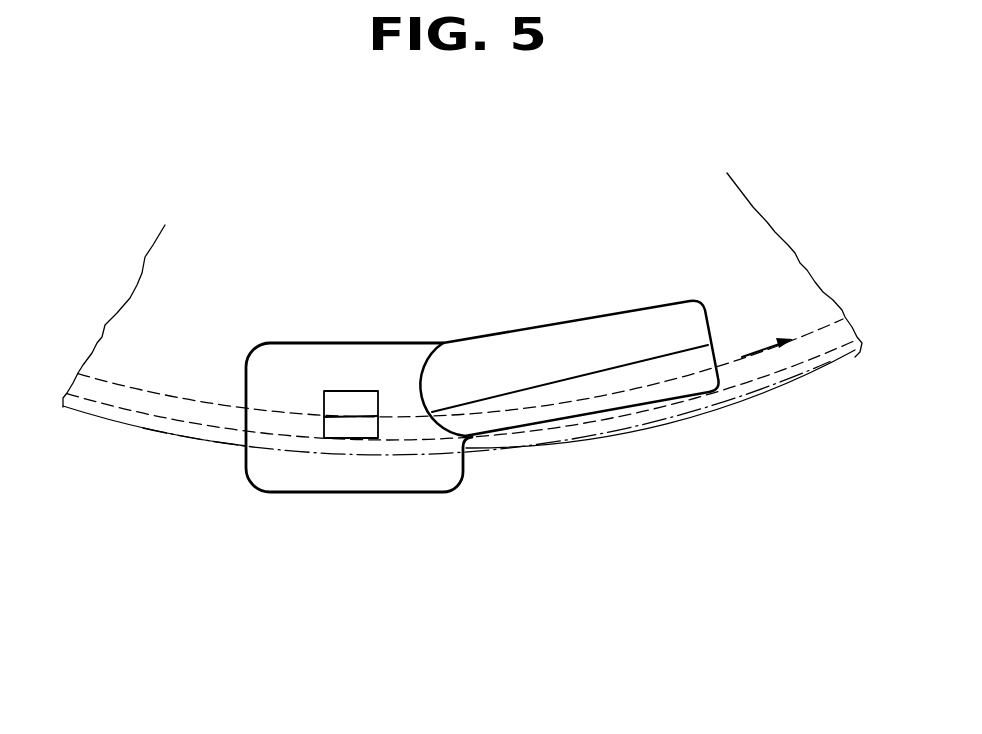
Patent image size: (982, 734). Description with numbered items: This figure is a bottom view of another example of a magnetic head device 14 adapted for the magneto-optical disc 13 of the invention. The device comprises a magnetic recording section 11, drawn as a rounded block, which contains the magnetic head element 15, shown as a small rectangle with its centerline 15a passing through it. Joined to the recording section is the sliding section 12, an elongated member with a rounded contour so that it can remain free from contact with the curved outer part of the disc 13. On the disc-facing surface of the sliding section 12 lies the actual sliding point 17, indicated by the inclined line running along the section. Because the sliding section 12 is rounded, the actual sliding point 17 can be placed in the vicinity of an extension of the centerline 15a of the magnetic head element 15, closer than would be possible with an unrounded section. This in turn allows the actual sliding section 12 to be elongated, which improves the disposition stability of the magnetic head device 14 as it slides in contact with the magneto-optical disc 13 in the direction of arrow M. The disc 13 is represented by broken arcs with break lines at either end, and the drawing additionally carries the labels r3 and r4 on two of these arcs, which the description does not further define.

The magnetic recording section 11 is at (282, 360).
The sliding section 12 is at (688, 318).
The magneto-optical disc 13 is at (770, 273).
The magnetic head device 14 is at (489, 387).
The magnetic head element 15 is at (358, 430).
The centerline of the magnetic head element 15a is at (350, 413).
The actual sliding point 17 is at (598, 372).
The radius r3 is at (444, 368).
The radius r4 is at (446, 390).
The arrow M is at (764, 336).